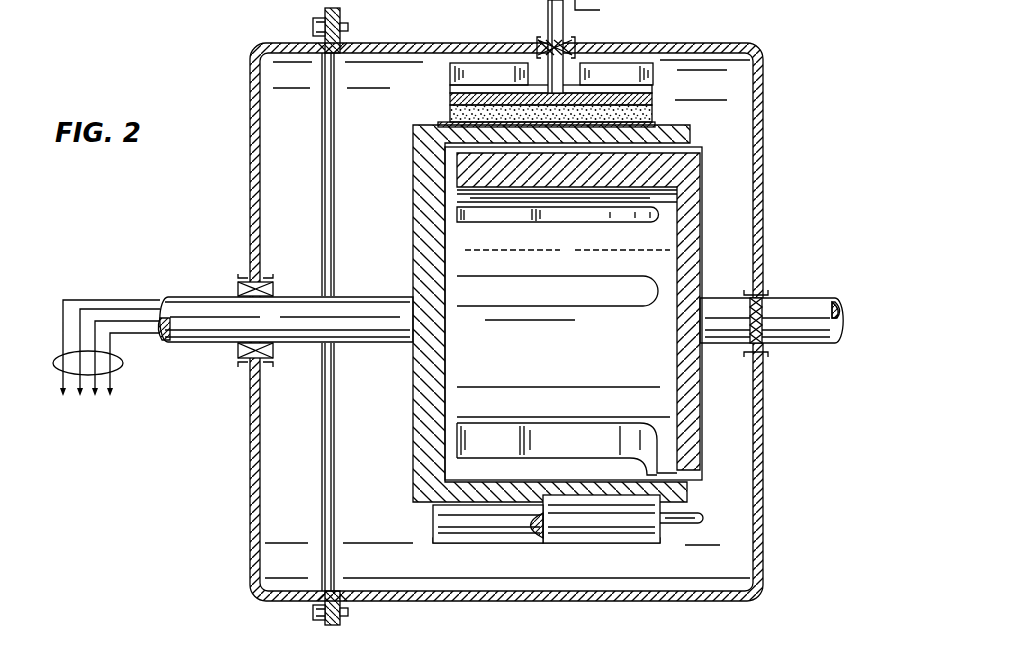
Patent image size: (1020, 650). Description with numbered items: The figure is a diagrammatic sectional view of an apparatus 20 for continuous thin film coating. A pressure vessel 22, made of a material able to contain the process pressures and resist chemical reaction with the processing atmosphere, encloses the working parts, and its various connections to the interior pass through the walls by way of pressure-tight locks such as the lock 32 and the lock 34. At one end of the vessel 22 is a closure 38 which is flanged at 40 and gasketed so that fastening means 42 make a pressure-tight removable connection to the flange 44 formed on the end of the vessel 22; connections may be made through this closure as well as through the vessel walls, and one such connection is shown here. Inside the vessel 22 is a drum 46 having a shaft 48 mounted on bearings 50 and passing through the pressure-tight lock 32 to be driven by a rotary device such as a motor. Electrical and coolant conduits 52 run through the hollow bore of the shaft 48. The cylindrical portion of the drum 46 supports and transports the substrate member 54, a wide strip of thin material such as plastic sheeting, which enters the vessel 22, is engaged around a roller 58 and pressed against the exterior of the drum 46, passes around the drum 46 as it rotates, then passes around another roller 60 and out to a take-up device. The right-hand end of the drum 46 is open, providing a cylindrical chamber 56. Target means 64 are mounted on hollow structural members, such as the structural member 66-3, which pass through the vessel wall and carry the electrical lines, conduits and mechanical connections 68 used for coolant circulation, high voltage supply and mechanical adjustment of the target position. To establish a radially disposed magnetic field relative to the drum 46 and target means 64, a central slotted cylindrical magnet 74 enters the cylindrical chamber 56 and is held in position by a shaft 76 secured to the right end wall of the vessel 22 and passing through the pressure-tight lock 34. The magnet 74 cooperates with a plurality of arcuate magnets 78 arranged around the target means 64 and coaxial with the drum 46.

The apparatus 20 is at (798, 68).
The pressure vessel 22 is at (718, 44).
The pressure-tight lock 32 is at (240, 277).
The pressure-tight lock 34 is at (762, 292).
The closure 38 is at (252, 93).
The flange 40 is at (314, 22).
The fastening means 42 is at (347, 26).
The flange 44 is at (341, 618).
The drum 46 is at (410, 437).
The shaft 48 is at (322, 345).
The bearings 50 is at (240, 354).
The electrical and coolant conduits 52 is at (55, 368).
The substrate member 54 is at (438, 122).
The cylindrical chamber 56 is at (683, 147).
The roller 58 is at (440, 518).
The roller 60 is at (612, 522).
The target means 64 is at (493, 100).
The structural member 66-3 is at (555, 27).
The electrical lines, conduits and mechanical connections 68 is at (590, 5).
The central slotted cylindrical magnet 74 is at (700, 424).
The shaft 76 is at (812, 338).
The arcuate magnets 78 is at (648, 70).